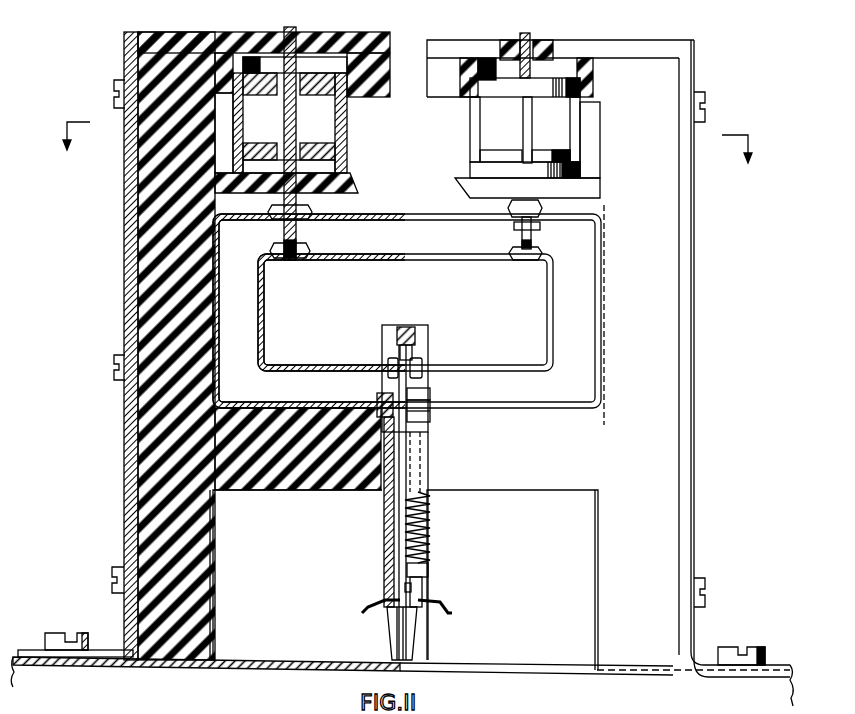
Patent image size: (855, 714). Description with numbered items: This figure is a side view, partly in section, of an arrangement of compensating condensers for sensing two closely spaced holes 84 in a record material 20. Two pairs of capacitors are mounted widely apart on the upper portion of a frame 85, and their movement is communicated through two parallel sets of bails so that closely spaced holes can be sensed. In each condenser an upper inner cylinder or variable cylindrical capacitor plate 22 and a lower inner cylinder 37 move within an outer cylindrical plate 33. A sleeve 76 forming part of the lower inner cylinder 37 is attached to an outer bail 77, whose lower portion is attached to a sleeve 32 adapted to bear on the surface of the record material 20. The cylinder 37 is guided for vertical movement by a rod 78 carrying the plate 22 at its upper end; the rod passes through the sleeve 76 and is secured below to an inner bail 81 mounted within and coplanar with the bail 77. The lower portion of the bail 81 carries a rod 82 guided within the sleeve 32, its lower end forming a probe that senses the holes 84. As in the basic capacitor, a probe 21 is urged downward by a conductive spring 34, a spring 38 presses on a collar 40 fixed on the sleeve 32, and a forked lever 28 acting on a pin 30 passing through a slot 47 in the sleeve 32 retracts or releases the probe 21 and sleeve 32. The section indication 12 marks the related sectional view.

The section line 12 is at (406, 154).
The record material 20 is at (258, 662).
The probe 21 is at (400, 622).
The variable cylindrical capacitor plate 22 is at (290, 90).
The forked lever 28 is at (363, 607).
The pin 30 is at (420, 593).
The sleeve 32 is at (420, 640).
The outer cylindrical plate 33 is at (347, 133).
The spring 34 is at (415, 323).
The lower inner cylinder 37 is at (333, 145).
The spring 38 is at (430, 517).
The collar 40 is at (430, 563).
The slot 47 is at (418, 580).
The sleeve 76 is at (280, 208).
The bail 77 is at (383, 220).
The rod 78 is at (293, 241).
The bail 81 is at (380, 253).
The rod 82 is at (420, 392).
The holes 84 is at (323, 660).
The frame 85 is at (250, 488).